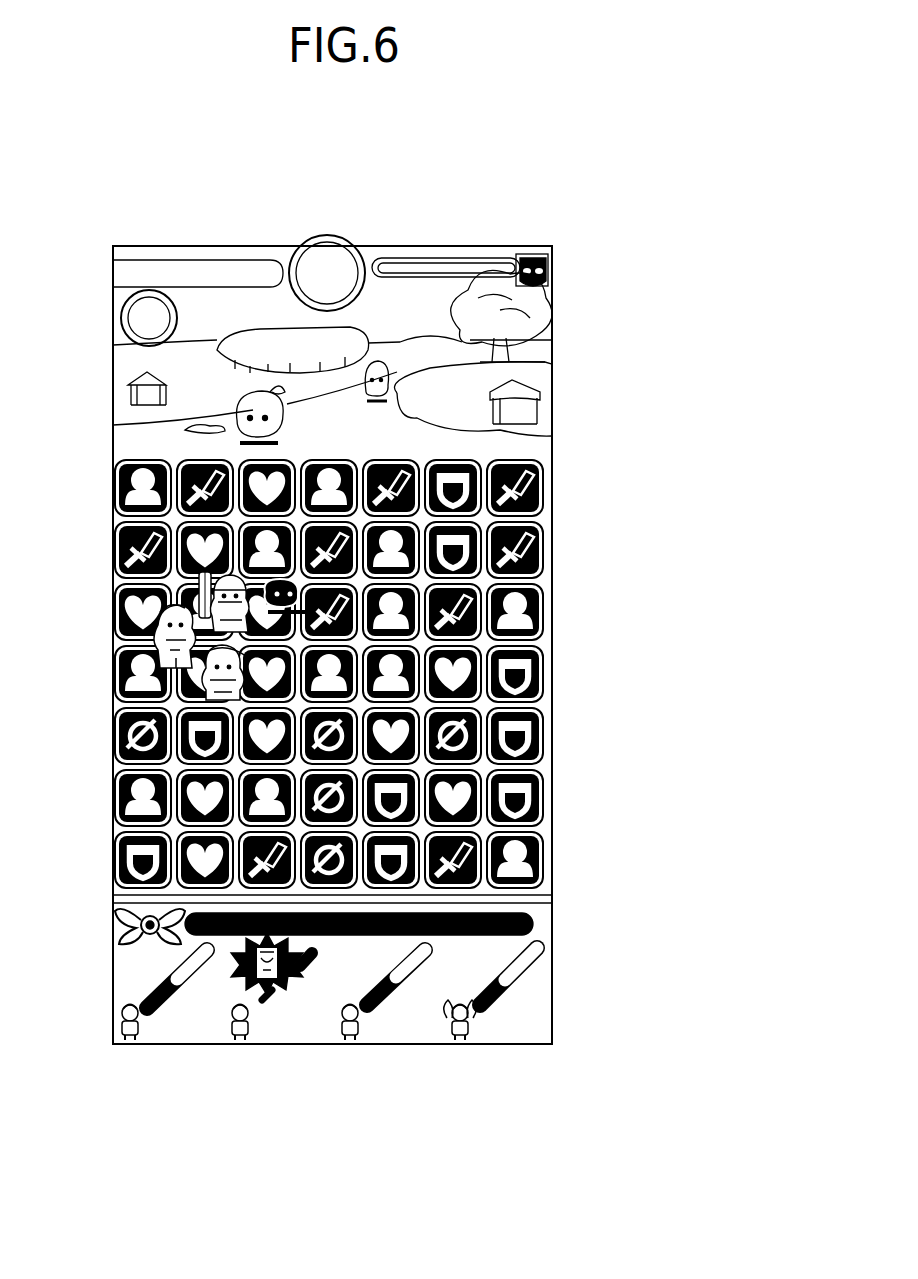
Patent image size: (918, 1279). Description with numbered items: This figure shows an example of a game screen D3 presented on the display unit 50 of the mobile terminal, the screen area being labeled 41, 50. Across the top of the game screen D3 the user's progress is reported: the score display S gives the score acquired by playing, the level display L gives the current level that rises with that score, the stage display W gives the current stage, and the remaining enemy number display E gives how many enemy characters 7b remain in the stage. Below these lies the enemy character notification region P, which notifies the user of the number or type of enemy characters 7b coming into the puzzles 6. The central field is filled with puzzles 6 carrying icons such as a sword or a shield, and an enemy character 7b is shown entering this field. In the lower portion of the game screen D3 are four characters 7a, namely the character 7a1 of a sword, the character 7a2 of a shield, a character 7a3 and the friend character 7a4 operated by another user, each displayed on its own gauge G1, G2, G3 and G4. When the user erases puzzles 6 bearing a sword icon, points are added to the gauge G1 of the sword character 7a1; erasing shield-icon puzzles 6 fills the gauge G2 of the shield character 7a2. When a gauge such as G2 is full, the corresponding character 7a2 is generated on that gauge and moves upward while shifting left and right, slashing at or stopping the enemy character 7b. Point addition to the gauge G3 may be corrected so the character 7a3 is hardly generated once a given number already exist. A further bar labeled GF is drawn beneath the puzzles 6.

The game screen 41 is at (332, 593).
The display unit 50 is at (231, 244).
The score display S is at (180, 270).
The stage display W is at (327, 258).
The game screen D3 is at (415, 258).
The remaining enemy number display E is at (495, 262).
The level display L is at (111, 341).
The enemy character notification region P is at (557, 288).
The puzzles 6 is at (553, 478).
The enemy character 7b is at (245, 557).
The character 7a is at (266, 887).
The character of a sword 7a1 is at (160, 644).
The character of a shield 7a2 is at (190, 585).
The character 7a3 is at (200, 692).
The friend character 7a4 is at (473, 1072).
The gauge of the character of the sword G1 is at (170, 1002).
The gauge of the character of the shield G2 is at (288, 985).
The gauge G3 is at (400, 1002).
The skill gauge of fourth character G4 is at (513, 1002).
The fever gauge GF is at (535, 926).